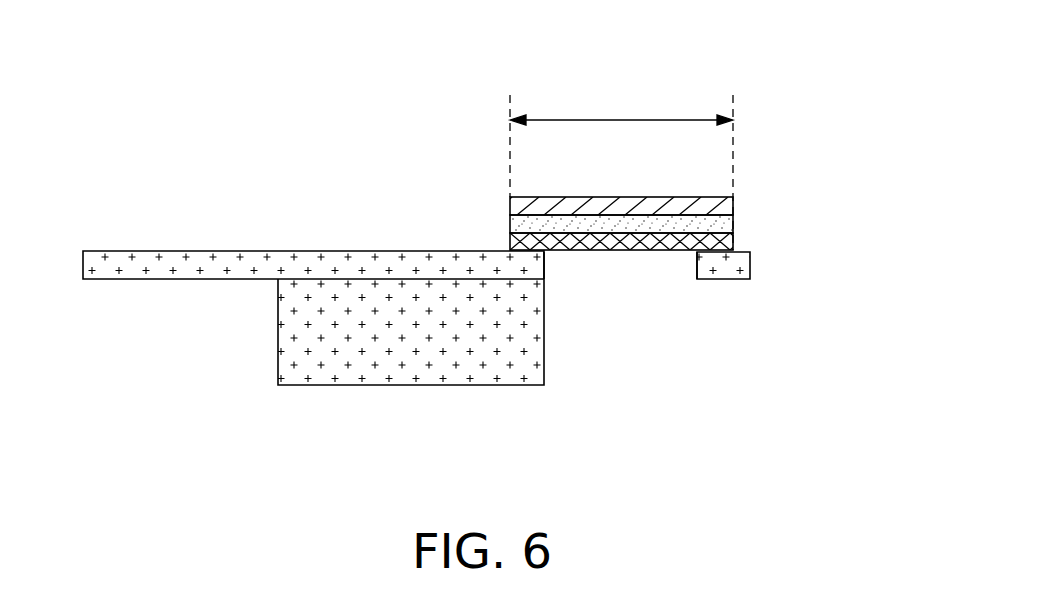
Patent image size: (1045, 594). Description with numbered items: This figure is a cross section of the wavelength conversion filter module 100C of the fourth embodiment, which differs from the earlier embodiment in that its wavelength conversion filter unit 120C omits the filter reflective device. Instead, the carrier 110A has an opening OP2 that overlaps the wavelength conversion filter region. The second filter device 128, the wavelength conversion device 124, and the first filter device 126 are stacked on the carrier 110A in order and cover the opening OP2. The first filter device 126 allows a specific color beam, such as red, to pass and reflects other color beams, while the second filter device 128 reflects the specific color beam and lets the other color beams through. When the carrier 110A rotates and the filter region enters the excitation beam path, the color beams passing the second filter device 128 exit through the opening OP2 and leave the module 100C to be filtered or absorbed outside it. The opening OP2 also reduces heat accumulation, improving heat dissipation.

The wavelength conversion filter module 100C is at (890, 453).
The carrier 110A is at (225, 268).
The opening OP2 is at (633, 286).
The wavelength conversion filter unit 120C is at (689, 190).
The first filter device 126 is at (733, 204).
The wavelength conversion device 124 is at (733, 222).
The second filter device 128 is at (664, 236).